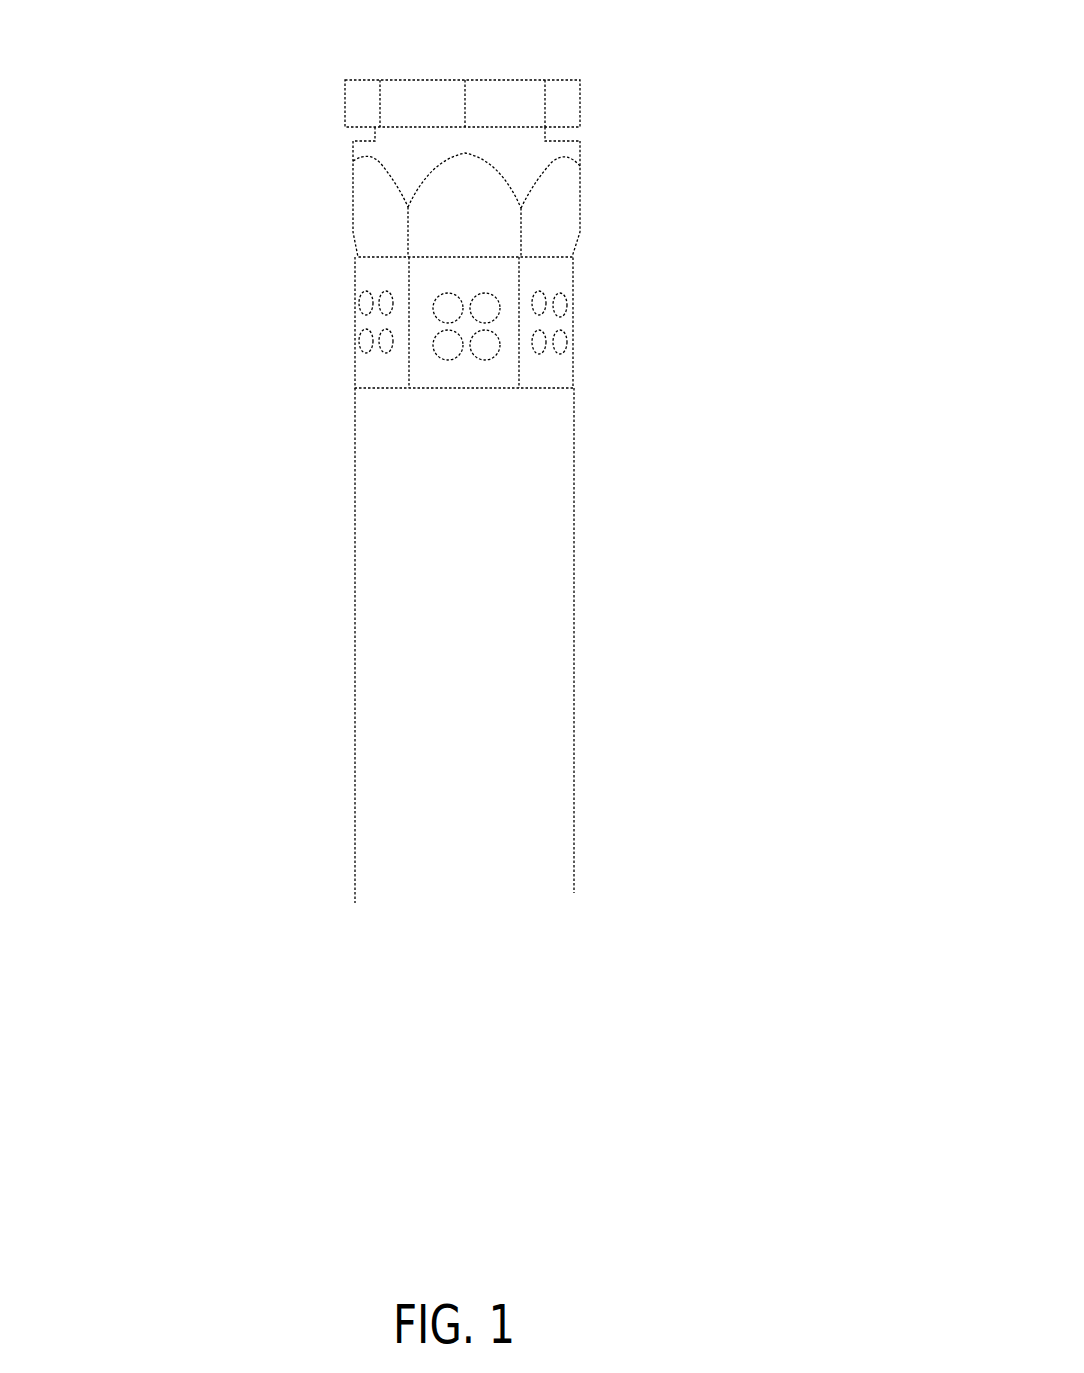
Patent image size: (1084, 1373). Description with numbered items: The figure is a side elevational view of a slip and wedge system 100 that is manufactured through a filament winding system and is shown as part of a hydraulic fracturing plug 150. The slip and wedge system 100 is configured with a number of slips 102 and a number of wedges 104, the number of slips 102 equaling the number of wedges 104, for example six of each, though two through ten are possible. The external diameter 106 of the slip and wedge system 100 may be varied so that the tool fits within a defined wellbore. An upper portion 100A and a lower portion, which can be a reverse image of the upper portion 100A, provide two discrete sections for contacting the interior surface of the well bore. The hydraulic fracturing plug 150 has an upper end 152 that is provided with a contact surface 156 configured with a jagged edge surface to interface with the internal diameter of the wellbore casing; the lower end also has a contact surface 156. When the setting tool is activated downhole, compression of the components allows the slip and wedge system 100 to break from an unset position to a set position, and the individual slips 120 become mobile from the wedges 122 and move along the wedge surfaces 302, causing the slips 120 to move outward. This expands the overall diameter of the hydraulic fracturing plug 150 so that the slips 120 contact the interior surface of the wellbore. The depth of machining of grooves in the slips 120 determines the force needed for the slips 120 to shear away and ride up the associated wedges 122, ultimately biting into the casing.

The slip and wedge system 100 is at (767, 192).
The upper portion 100A is at (238, 97).
The slips 102 is at (352, 372).
The wedges 104 is at (352, 237).
The external diameter 106 is at (577, 21).
The slips 120 is at (529, 333).
The wedges 122 is at (510, 205).
The hydraulic fracturing plug 150 is at (799, 327).
The upper end 152 is at (578, 82).
The contact surface 156 is at (562, 306).
The wedge surfaces 302 is at (466, 205).